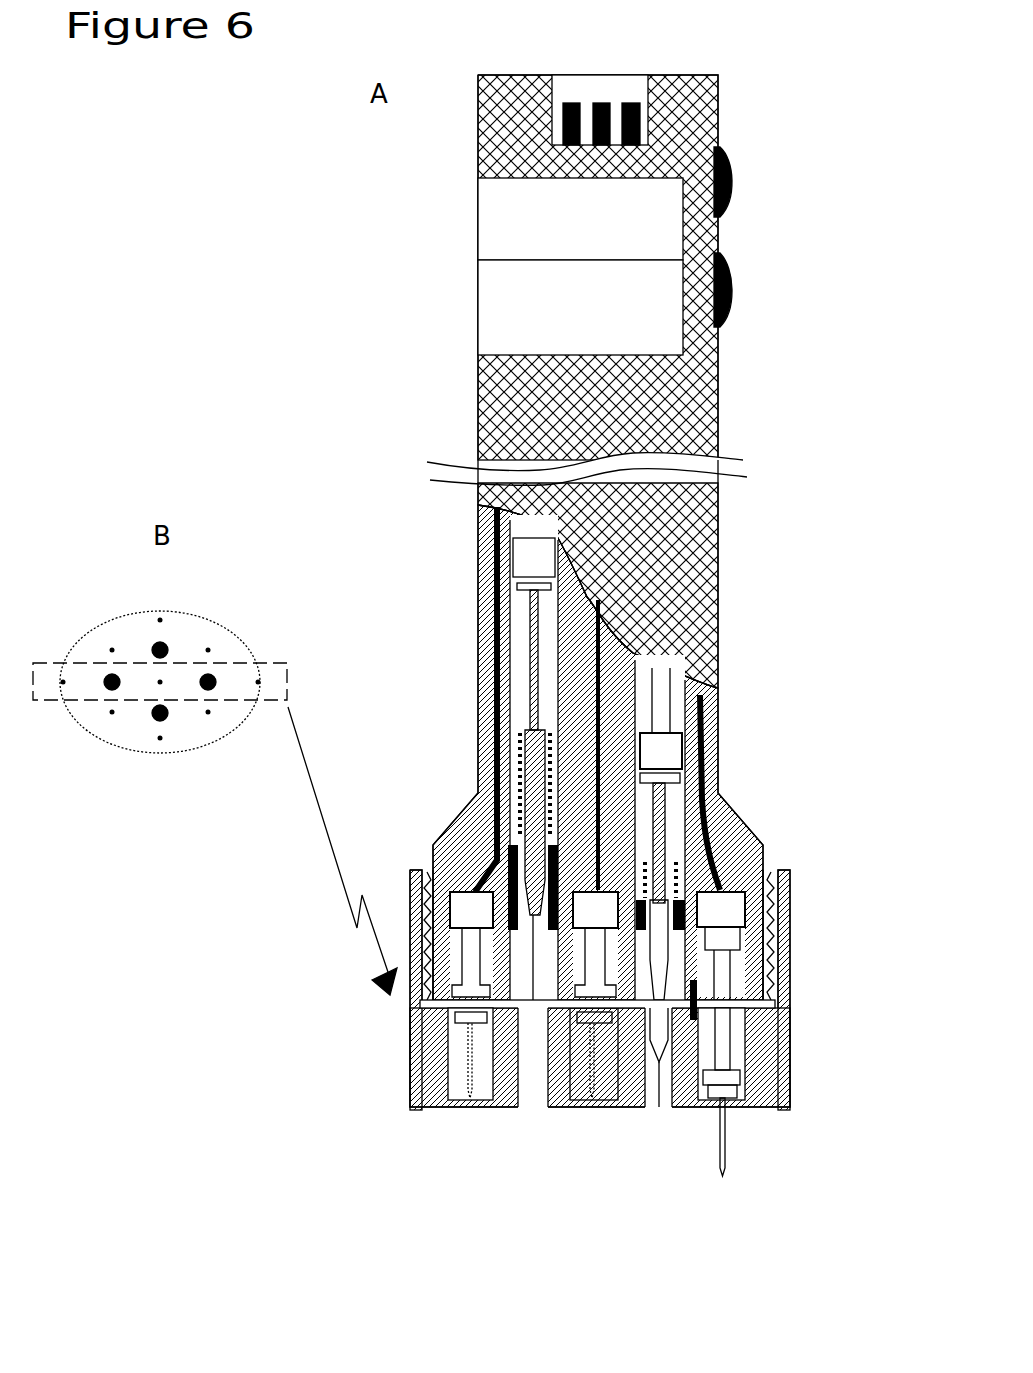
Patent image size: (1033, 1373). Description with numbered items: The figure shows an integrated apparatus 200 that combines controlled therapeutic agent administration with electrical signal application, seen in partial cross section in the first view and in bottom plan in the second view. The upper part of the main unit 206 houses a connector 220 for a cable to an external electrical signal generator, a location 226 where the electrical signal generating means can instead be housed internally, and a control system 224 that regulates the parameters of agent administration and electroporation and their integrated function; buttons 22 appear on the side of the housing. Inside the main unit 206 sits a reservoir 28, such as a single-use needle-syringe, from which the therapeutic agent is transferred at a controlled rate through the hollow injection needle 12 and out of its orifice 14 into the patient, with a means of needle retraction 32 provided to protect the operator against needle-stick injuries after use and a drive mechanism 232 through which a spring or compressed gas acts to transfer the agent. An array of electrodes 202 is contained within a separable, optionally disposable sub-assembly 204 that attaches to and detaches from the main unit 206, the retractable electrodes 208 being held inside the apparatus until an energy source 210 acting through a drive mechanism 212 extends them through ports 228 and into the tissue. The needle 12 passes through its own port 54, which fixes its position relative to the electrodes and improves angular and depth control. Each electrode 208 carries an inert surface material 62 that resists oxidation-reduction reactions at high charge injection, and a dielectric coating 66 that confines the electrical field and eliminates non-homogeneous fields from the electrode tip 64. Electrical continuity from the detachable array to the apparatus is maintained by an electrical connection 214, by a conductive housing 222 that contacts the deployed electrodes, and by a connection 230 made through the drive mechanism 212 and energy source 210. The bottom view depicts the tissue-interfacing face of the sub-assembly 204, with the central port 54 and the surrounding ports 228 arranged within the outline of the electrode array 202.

In FIG. 6A, the integrated apparatus 200 is at (790, 468).
In FIG. 6A, the connector 220 is at (600, 72).
In FIG. 6A, the location of electrical signal generating means 226 is at (505, 218).
In FIG. 6A, the control system 224 is at (505, 312).
In FIG. 6A, the actuator buttons 22 is at (740, 300).
In FIG. 6A, the main unit 206 is at (470, 605).
In FIG. 6A, the connection 230 is at (460, 873).
In FIG. 6A, the electrical connection 214 is at (487, 655).
In FIG. 6A, the reservoir 28 is at (533, 790).
In FIG. 6A, the means of needle retraction 32 is at (520, 750).
In FIG. 6A, the energy source 210 is at (457, 902).
In FIG. 6A, the electrode tip 64 is at (595, 1108).
In FIG. 6A, the drive mechanism 232 is at (662, 752).
In FIG. 6A, the sub-assembly 204 is at (410, 1057).
In FIG. 6B, the sub-assembly 204 is at (280, 662).
In FIG. 6A, the drive mechanism 212 is at (422, 1003).
In FIG. 6A, the port 228 is at (468, 1108).
In FIG. 6B, the port 228 is at (110, 713).
In FIG. 6A, the inert surface material 62 is at (468, 1067).
In FIG. 6A, the port 54 is at (535, 1108).
In FIG. 6B, the port 54 is at (153, 645).
In FIG. 6A, the injection needle 12 is at (658, 1122).
In FIG. 6A, the orifice 14 is at (660, 1143).
In FIG. 6A, the conductive housing 222 is at (698, 1110).
In FIG. 6A, the dielectric coating 66 is at (753, 1137).
In FIG. 6A, the retractable electrode 208 is at (433, 1107).
In FIG. 6B, the array of electrodes 202 is at (180, 750).